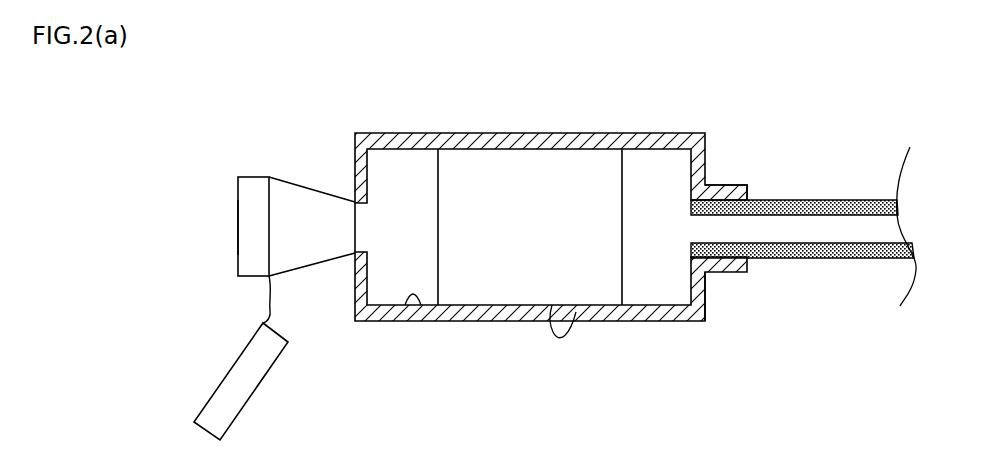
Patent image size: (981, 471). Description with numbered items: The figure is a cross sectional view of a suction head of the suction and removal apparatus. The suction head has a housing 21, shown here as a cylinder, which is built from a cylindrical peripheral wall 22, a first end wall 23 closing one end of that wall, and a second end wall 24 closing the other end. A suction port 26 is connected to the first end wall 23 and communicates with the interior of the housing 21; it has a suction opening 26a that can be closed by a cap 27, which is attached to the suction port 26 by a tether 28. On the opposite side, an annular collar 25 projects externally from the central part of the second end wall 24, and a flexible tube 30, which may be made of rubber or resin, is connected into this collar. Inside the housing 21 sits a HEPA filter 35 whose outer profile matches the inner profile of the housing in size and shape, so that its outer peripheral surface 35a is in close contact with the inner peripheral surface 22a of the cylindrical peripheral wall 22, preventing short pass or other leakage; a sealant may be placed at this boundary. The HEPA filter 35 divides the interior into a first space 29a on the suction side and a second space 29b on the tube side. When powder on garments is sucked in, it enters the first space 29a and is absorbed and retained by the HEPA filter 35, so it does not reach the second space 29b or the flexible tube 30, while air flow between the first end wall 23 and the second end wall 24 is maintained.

The housing 21 is at (478, 133).
The cylindrical peripheral wall 22 is at (560, 133).
The inner peripheral surface 22a is at (404, 306).
The first end wall 23 is at (355, 168).
The second end wall 24 is at (707, 302).
The annular collar 25 is at (738, 185).
The suction port 26 is at (253, 177).
The suction opening 26a is at (238, 240).
The cap 27 is at (254, 394).
The tether 28 is at (272, 292).
The first space 29a is at (402, 227).
The second space 29b is at (656, 227).
The flexible tube 30 is at (824, 200).
The HEPA filter 35 is at (507, 283).
The outer peripheral surface 35a is at (576, 312).